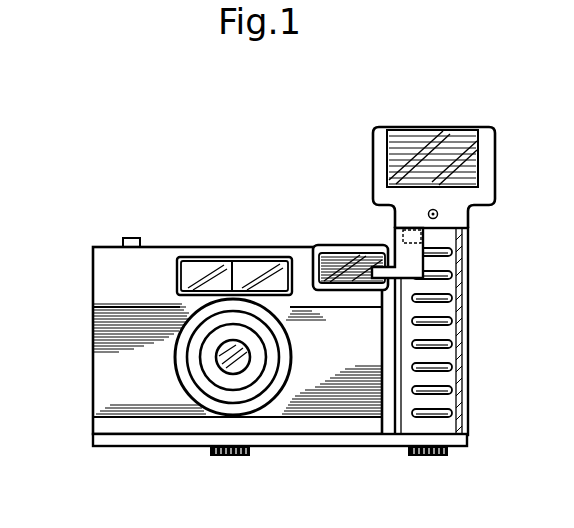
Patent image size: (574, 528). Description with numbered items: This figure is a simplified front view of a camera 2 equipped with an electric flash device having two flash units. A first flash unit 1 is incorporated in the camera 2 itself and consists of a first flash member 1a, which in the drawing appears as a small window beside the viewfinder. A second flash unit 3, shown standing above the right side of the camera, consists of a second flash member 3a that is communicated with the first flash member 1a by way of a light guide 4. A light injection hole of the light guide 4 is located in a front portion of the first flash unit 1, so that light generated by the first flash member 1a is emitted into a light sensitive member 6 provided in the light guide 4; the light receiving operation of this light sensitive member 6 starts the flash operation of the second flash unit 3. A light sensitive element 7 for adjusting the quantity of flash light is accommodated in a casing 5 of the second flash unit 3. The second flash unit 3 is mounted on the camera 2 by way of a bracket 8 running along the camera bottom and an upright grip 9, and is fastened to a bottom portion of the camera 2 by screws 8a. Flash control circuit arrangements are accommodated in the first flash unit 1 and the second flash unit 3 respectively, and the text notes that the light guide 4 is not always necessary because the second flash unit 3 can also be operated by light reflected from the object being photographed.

The first flash unit 1 is at (306, 241).
The first flash member 1a is at (340, 260).
The camera 2 is at (89, 352).
The second flash unit 3 is at (499, 170).
The second flash member 3a is at (431, 150).
The light guide 4 is at (412, 262).
The casing 5 is at (440, 214).
The light sensitive member 6 is at (425, 242).
The light sensitive element 7 is at (468, 208).
The bracket 8 is at (317, 447).
The screws 8a is at (230, 458).
The grip 9 is at (468, 363).